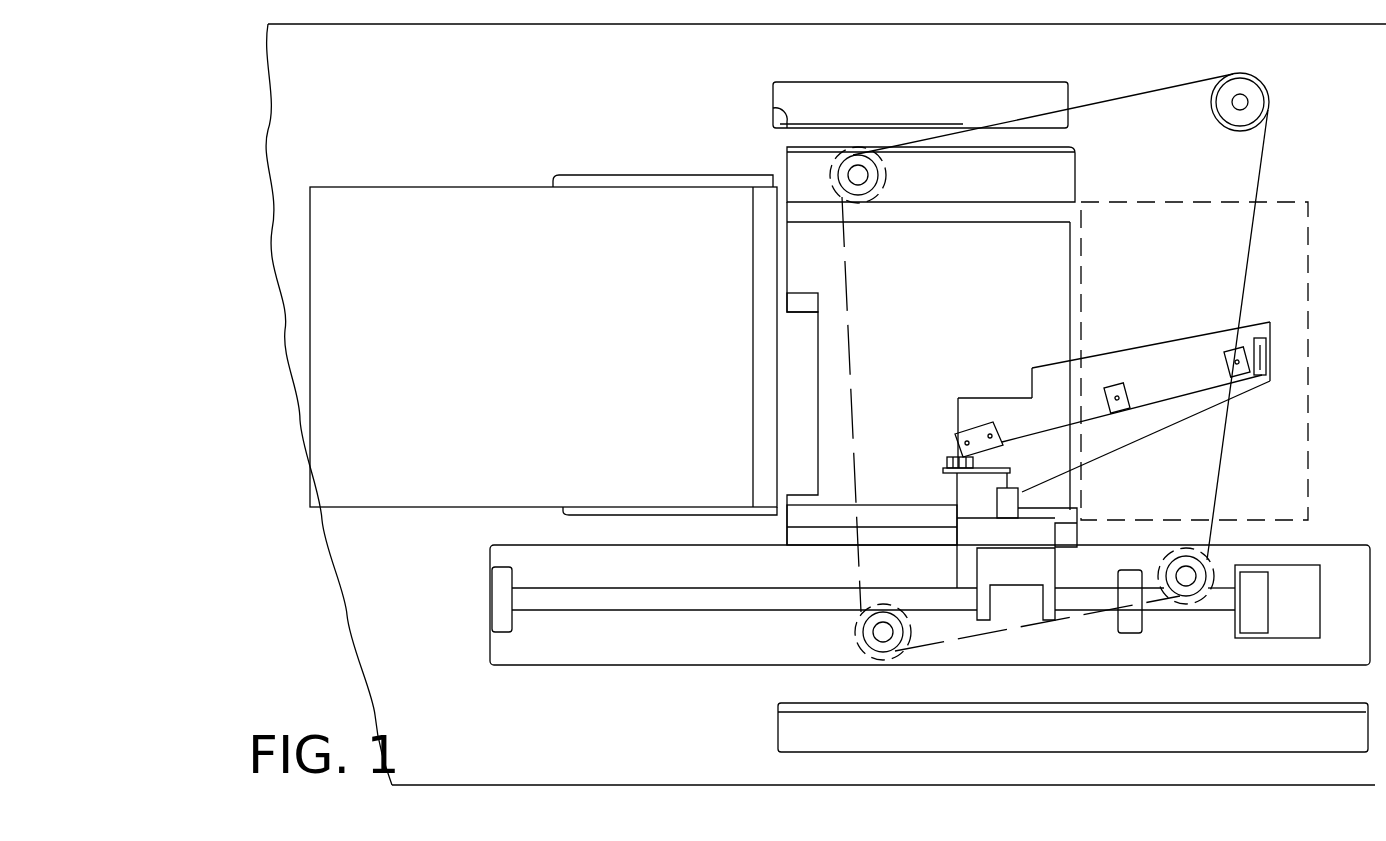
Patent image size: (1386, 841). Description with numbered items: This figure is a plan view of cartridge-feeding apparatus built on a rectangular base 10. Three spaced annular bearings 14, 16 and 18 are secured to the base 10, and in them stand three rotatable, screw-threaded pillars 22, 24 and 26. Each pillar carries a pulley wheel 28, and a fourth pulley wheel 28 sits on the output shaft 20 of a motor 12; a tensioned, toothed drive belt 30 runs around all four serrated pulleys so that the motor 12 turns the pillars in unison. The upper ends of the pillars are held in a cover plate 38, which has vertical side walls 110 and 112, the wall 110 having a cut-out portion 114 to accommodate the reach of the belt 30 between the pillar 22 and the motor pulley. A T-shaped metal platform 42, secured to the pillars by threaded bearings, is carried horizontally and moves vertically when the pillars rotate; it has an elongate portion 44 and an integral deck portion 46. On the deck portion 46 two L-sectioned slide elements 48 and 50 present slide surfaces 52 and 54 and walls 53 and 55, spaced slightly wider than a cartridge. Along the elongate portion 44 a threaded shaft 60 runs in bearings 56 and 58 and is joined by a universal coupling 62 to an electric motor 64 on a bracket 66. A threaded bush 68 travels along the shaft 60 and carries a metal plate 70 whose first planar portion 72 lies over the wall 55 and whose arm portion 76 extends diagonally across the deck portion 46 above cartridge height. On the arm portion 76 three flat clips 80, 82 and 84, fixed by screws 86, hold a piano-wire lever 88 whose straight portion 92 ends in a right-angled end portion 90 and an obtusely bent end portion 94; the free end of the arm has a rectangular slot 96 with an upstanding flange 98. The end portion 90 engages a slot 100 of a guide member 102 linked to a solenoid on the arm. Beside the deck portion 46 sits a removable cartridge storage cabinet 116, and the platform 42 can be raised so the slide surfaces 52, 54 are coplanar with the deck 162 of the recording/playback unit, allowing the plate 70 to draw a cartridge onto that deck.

The rectangular base 10 is at (540, 737).
The motor 12 is at (1275, 108).
The annular bearing 14 is at (836, 178).
The annular bearing 16 is at (866, 658).
The annular bearing 18 is at (1168, 548).
The output shaft 20 is at (1252, 101).
The rotatable pillar 22 is at (864, 190).
The rotatable pillar 24 is at (898, 652).
The rotatable pillar 26 is at (1198, 587).
The pulley wheel 28 is at (1266, 84).
The drive belt 30 is at (1138, 98).
The cover plate 38 is at (868, 82).
The platform 42 is at (716, 672).
The elongate portion 44 is at (687, 652).
The deck portion 46 is at (937, 357).
The slide element 48 is at (1068, 185).
The slide element 50 is at (1078, 520).
The slide surface 52 is at (990, 215).
The wall 53 is at (982, 184).
The slide surface 54 is at (900, 506).
The wall 55 is at (832, 535).
The bearing 56 is at (497, 598).
The bearing 58 is at (1130, 633).
The threaded shaft 60 is at (757, 592).
The universal coupling 62 is at (1220, 608).
The electric motor 64 is at (1253, 622).
The bracket 66 is at (1310, 570).
The threaded bush 68 is at (1002, 575).
The metal plate 70 is at (1143, 347).
The first planar portion 72 is at (962, 556).
The arm portion 76 is at (1093, 358).
The clip 80 is at (979, 432).
The clip 82 is at (1122, 412).
The clip 84 is at (1240, 376).
The screws 86 is at (988, 432).
The lever 88 is at (1177, 398).
The end portion 90 is at (950, 473).
The straight portion 92 is at (1052, 428).
The end portion 94 is at (1268, 360).
The rectangular slot 96 is at (1272, 382).
The flange 98 is at (1270, 338).
The slot 100 is at (947, 460).
The guide member 102 is at (967, 473).
The side wall 110 is at (772, 113).
The side wall 112 is at (1078, 702).
The cut-out portion 114 is at (982, 128).
The cartridge storage cabinet 116 is at (1312, 262).
The deck 162 is at (455, 193).